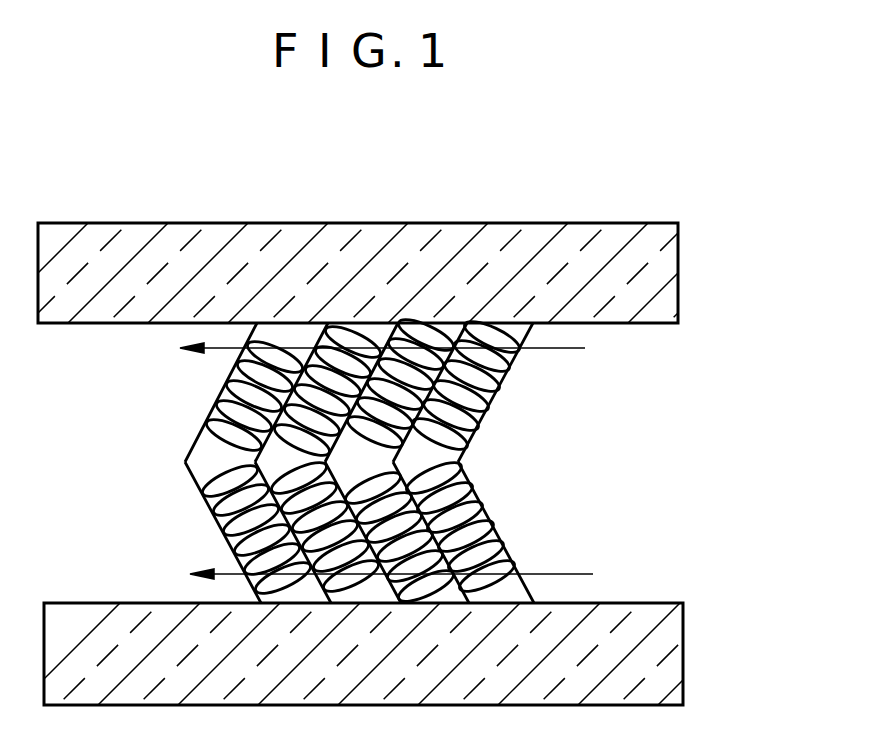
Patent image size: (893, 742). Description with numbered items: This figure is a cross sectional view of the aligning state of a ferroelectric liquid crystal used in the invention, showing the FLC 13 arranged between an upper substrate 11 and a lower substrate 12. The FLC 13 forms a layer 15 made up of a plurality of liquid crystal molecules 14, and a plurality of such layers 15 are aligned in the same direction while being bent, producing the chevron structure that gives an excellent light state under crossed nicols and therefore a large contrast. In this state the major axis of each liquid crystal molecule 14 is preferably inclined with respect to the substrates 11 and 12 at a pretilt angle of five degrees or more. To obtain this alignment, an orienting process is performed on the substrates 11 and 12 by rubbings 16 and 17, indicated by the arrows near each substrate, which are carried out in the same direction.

The substrate 11 is at (680, 297).
The substrate 12 is at (683, 675).
The FLC 13 is at (445, 461).
The liquid crystal molecule 14 is at (217, 481).
The layer 15 is at (217, 400).
The rubbing 16 is at (543, 348).
The rubbing 17 is at (555, 574).